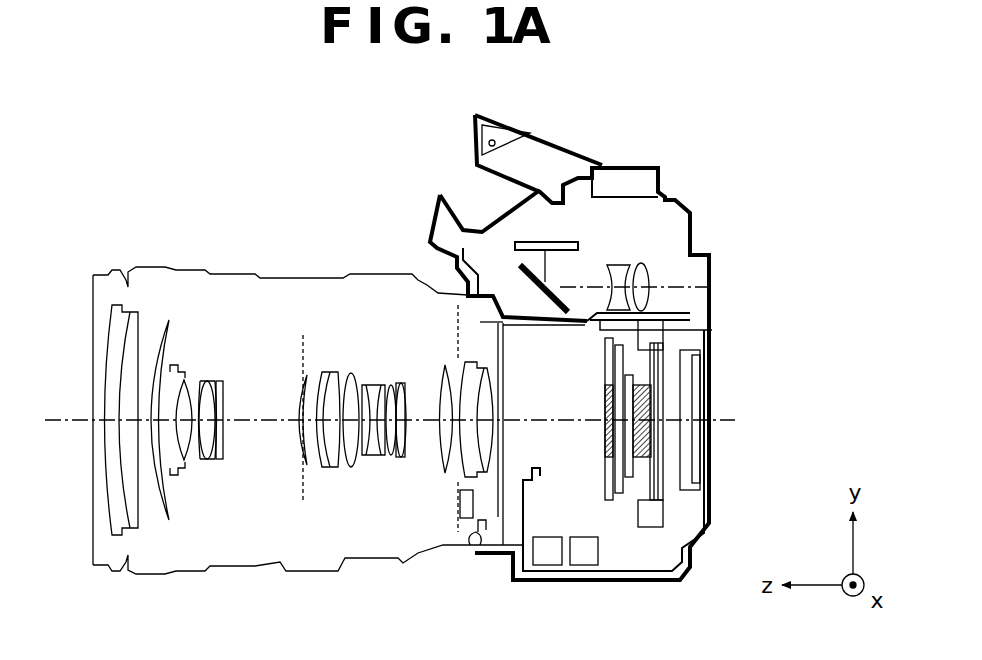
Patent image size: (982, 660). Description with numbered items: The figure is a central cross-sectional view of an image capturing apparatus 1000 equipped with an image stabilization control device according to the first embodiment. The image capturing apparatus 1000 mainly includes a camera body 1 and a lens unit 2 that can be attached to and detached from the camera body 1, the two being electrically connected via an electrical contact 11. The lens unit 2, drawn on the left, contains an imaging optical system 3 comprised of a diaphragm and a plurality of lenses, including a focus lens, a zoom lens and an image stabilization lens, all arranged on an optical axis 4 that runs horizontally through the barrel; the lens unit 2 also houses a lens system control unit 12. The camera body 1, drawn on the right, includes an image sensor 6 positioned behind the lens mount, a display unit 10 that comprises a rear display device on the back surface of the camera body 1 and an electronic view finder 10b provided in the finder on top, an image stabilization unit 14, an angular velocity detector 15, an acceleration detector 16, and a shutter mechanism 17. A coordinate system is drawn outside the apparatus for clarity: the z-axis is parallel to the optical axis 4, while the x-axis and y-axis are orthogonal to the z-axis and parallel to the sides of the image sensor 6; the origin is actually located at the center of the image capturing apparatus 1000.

The image capturing apparatus 1000 is at (192, 160).
The camera body 1 is at (683, 181).
The lens unit 2 is at (270, 275).
The imaging optical system 3 is at (218, 524).
The optical axis 4 is at (60, 424).
The image sensor 6 is at (650, 437).
The display unit 10 is at (700, 460).
The electronic view finder 10b is at (655, 265).
The electrical contact 11 is at (470, 542).
The lens system control unit 12 is at (452, 505).
The image stabilization unit 14 is at (651, 522).
The angular velocity detector 15 is at (548, 562).
The acceleration detector 16 is at (585, 558).
The shutter mechanism 17 is at (620, 500).